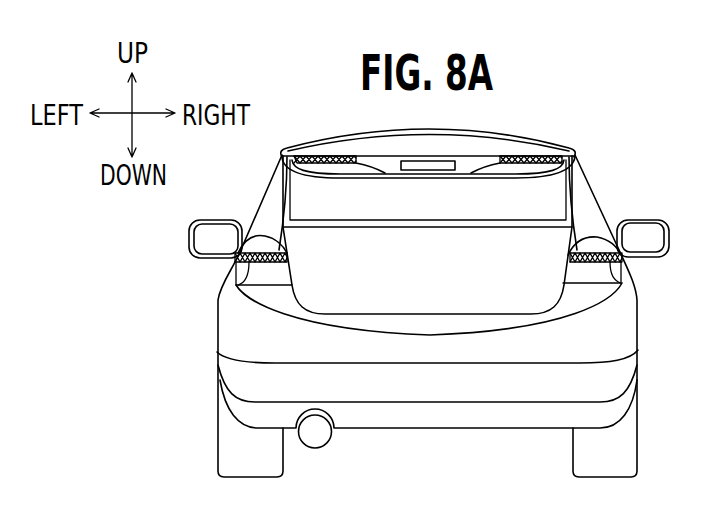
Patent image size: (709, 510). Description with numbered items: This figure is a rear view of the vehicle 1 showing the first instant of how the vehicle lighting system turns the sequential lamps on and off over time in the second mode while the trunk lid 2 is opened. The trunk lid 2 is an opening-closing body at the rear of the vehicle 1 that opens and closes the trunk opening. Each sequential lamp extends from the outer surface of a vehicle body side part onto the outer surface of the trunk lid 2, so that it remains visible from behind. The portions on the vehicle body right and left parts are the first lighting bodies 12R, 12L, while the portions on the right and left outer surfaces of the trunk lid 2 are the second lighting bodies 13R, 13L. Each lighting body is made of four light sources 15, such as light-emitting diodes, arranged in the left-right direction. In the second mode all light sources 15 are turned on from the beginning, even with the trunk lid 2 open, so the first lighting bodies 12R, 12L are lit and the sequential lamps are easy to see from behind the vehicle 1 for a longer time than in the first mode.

The vehicle 1 is at (629, 128).
The trunk lid 2 is at (287, 185).
The first lighting body 12L is at (241, 295).
The first lighting body 12R is at (626, 277).
The second lighting body 13L is at (322, 157).
The second lighting body 13R is at (522, 157).
The light source 15 is at (594, 236).